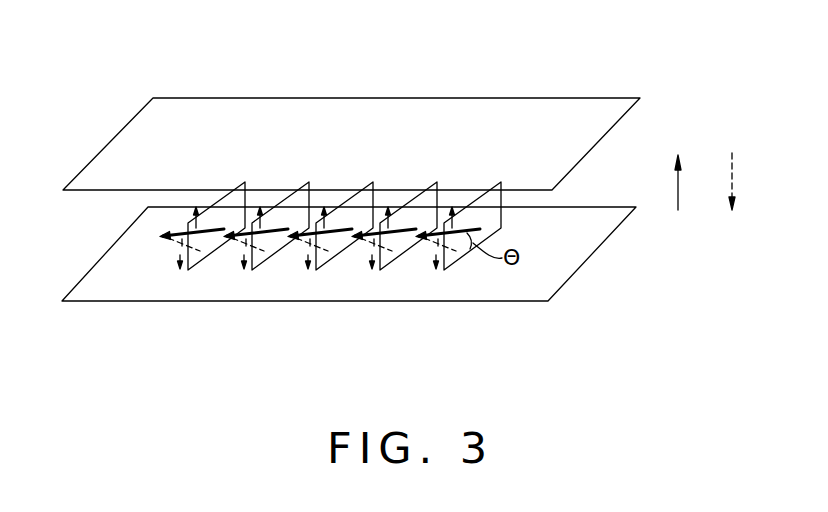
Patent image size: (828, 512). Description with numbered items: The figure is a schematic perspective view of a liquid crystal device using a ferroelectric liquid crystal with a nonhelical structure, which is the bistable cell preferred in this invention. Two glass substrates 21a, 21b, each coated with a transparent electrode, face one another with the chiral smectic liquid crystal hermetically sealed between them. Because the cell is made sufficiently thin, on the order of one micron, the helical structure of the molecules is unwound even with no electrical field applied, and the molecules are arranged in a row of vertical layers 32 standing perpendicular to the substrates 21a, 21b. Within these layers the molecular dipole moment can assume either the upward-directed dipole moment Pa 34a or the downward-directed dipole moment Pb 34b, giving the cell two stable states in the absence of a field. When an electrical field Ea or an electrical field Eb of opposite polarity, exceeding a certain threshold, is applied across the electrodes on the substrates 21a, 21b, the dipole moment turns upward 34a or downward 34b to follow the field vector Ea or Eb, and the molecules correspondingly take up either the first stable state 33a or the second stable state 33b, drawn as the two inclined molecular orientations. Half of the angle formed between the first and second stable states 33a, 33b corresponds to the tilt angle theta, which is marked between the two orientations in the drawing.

The substrate 21a is at (593, 98).
The substrate 21b is at (582, 265).
The vertical layer 32 is at (499, 196).
The first stable state 33a is at (228, 232).
The second stable state 33b is at (193, 248).
The dipole moment Pa directed upward 34a is at (192, 220).
The dipole moment Pb directed downward 34b is at (176, 243).
The electrical field Ea is at (693, 182).
The electrical field Eb is at (747, 181).